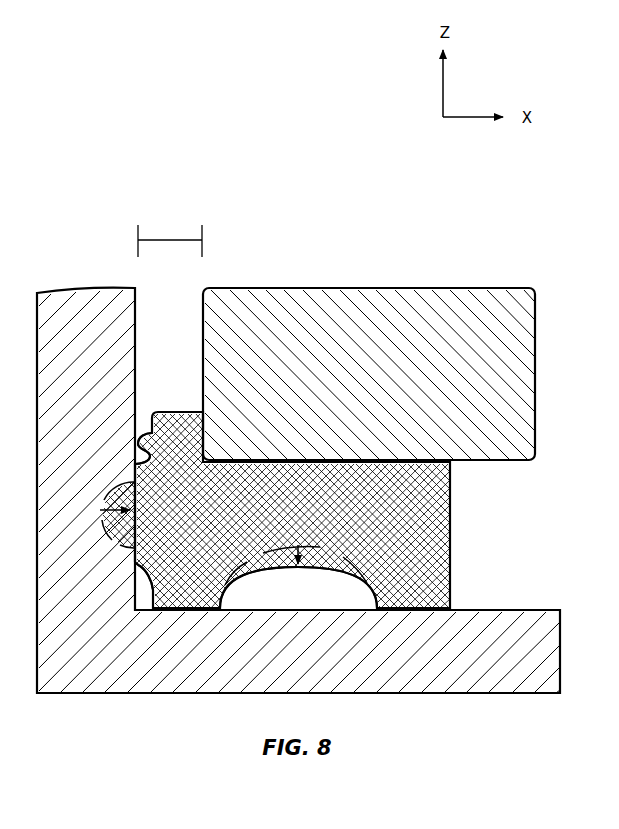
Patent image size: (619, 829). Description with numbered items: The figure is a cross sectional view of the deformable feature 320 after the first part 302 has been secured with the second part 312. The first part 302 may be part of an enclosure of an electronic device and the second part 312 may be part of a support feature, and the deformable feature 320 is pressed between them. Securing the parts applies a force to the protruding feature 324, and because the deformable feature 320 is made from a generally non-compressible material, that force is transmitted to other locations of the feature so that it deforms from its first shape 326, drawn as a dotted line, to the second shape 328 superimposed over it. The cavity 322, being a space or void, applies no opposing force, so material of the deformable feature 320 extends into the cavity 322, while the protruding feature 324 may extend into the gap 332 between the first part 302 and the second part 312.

The first part 302 is at (298, 490).
The second part 312 is at (369, 374).
The deformable feature 320 is at (292, 510).
The cavity 322 is at (298, 576).
The protruding feature 324 is at (145, 436).
The first shape 326 is at (137, 560).
The second shape 328 is at (450, 555).
The gap 332 is at (170, 240).